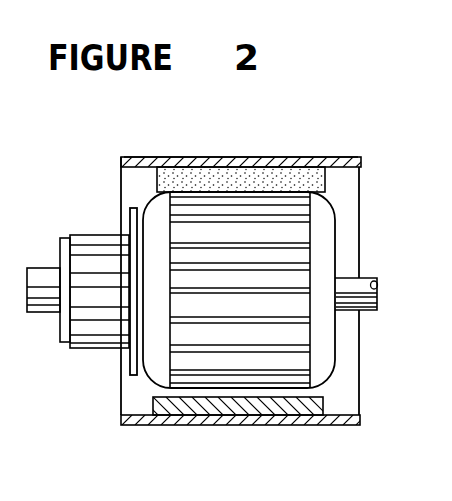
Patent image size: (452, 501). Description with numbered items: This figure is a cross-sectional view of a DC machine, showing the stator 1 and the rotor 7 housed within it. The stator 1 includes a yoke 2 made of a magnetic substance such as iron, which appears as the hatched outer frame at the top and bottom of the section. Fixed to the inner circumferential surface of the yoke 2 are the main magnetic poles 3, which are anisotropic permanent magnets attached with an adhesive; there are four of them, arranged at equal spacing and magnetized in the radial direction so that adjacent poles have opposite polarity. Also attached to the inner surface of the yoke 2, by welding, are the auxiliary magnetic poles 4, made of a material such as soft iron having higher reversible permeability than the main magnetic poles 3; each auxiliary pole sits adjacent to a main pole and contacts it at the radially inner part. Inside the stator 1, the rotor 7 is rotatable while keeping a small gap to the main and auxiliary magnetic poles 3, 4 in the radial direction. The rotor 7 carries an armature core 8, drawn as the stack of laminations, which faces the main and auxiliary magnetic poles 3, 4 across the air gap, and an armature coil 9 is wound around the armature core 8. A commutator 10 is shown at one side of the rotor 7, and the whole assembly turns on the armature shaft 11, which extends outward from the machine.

The stator 1 is at (196, 426).
The yoke 2 is at (280, 157).
The main magnetic poles 3 is at (184, 176).
The auxiliary magnetic poles 4 is at (288, 400).
The rotor 7 is at (338, 220).
The armature core 8 is at (233, 388).
The armature coil 9 is at (317, 355).
The commutator 10 is at (90, 338).
The armature shaft 11 is at (40, 299).